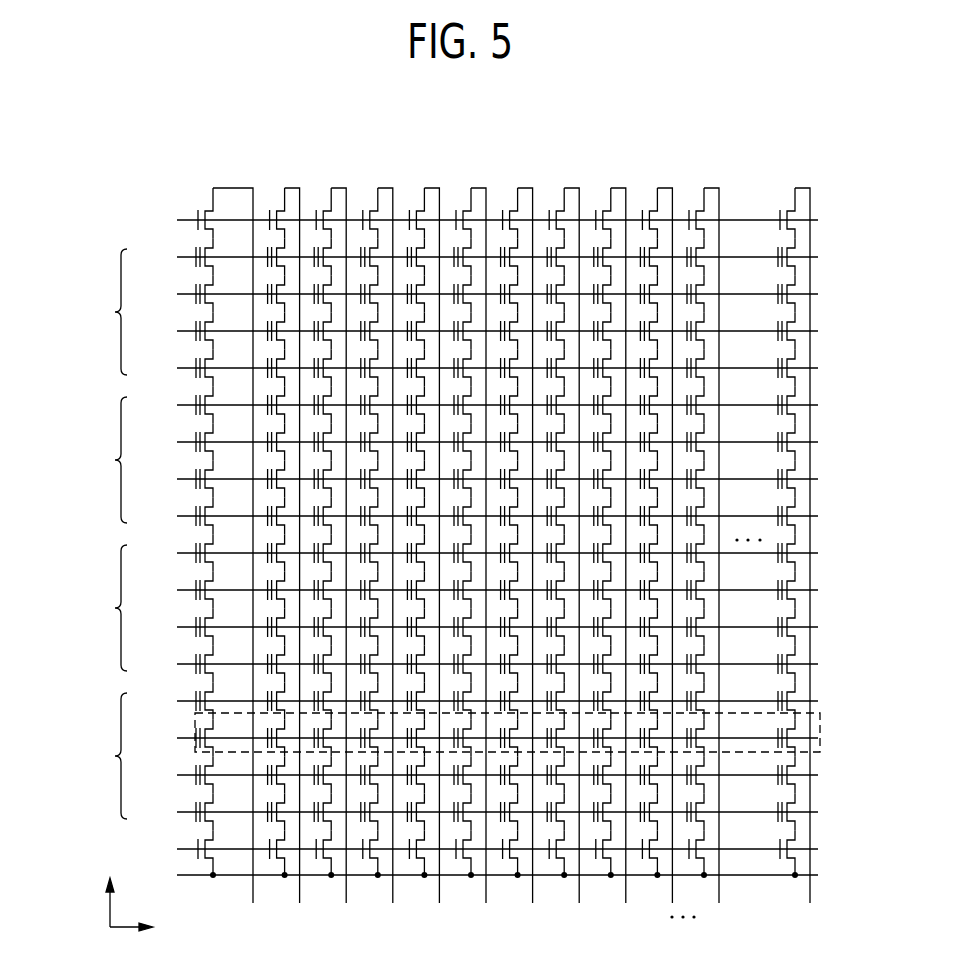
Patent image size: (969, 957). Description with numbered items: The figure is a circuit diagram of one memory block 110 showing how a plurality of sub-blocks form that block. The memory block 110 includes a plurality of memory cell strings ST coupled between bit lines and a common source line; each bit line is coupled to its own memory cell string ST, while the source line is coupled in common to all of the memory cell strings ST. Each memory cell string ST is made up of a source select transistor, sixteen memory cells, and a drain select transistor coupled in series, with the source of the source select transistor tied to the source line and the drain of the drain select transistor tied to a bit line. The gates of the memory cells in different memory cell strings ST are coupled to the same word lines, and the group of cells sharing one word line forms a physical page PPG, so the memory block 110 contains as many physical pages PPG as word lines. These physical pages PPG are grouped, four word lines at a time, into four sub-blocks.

The memory block 110 is at (738, 156).
The memory cell string ST is at (246, 187).
The physical page PPG is at (822, 735).